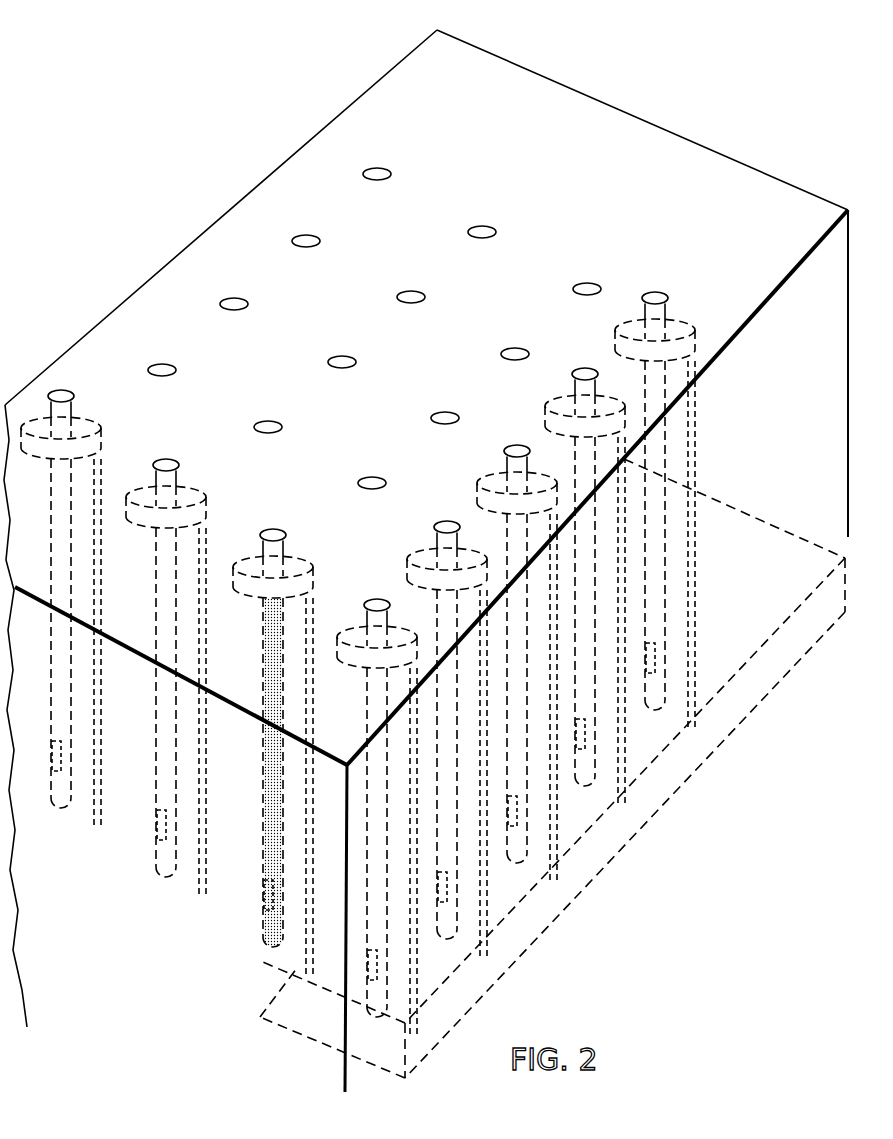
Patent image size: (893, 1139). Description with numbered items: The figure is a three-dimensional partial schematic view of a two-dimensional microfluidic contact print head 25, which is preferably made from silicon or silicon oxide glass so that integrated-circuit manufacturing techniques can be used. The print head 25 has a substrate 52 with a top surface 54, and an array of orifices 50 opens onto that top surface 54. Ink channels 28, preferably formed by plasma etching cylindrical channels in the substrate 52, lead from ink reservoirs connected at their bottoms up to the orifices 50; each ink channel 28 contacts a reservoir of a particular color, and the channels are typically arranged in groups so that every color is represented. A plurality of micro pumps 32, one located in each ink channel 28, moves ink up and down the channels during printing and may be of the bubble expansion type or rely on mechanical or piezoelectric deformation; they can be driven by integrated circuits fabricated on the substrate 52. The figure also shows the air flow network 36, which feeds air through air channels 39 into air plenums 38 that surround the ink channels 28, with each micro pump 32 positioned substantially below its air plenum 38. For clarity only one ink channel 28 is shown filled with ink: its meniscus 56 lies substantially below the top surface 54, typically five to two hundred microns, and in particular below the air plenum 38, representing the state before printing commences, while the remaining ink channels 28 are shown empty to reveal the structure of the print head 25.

The contact print head 25 is at (73, 346).
The ink channel 28 is at (253, 760).
The micro pump 32 is at (230, 915).
The air flow network 36 is at (540, 925).
The air plenum 38 is at (297, 563).
The air channel 39 is at (262, 1017).
The orifice 50 is at (497, 231).
The substrate 52 is at (813, 476).
The top surface 54 is at (596, 105).
The meniscus 56 is at (249, 772).